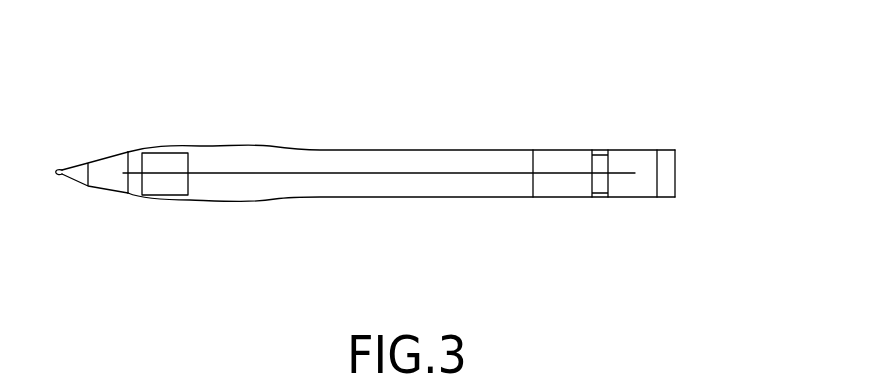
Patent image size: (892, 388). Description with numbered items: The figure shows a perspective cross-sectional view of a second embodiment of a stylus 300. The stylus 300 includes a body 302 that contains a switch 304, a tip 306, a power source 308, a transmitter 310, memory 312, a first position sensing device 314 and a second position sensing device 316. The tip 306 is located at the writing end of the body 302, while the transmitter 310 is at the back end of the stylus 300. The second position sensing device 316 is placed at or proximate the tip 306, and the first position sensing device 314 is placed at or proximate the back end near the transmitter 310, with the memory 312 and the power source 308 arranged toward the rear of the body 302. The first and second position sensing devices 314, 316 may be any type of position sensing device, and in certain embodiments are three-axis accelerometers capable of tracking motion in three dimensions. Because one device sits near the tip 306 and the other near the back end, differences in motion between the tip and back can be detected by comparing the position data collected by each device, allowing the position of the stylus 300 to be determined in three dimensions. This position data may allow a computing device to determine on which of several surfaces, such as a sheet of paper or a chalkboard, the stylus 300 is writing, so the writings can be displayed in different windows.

The stylus 300 is at (538, 74).
The body 302 is at (380, 150).
The switch 304 is at (98, 156).
The tip 306 is at (58, 177).
The power source 308 is at (634, 160).
The transmitter 310 is at (675, 197).
The memory 312 is at (600, 197).
The first position sensing device 314 is at (553, 197).
The second position sensing device 316 is at (165, 187).